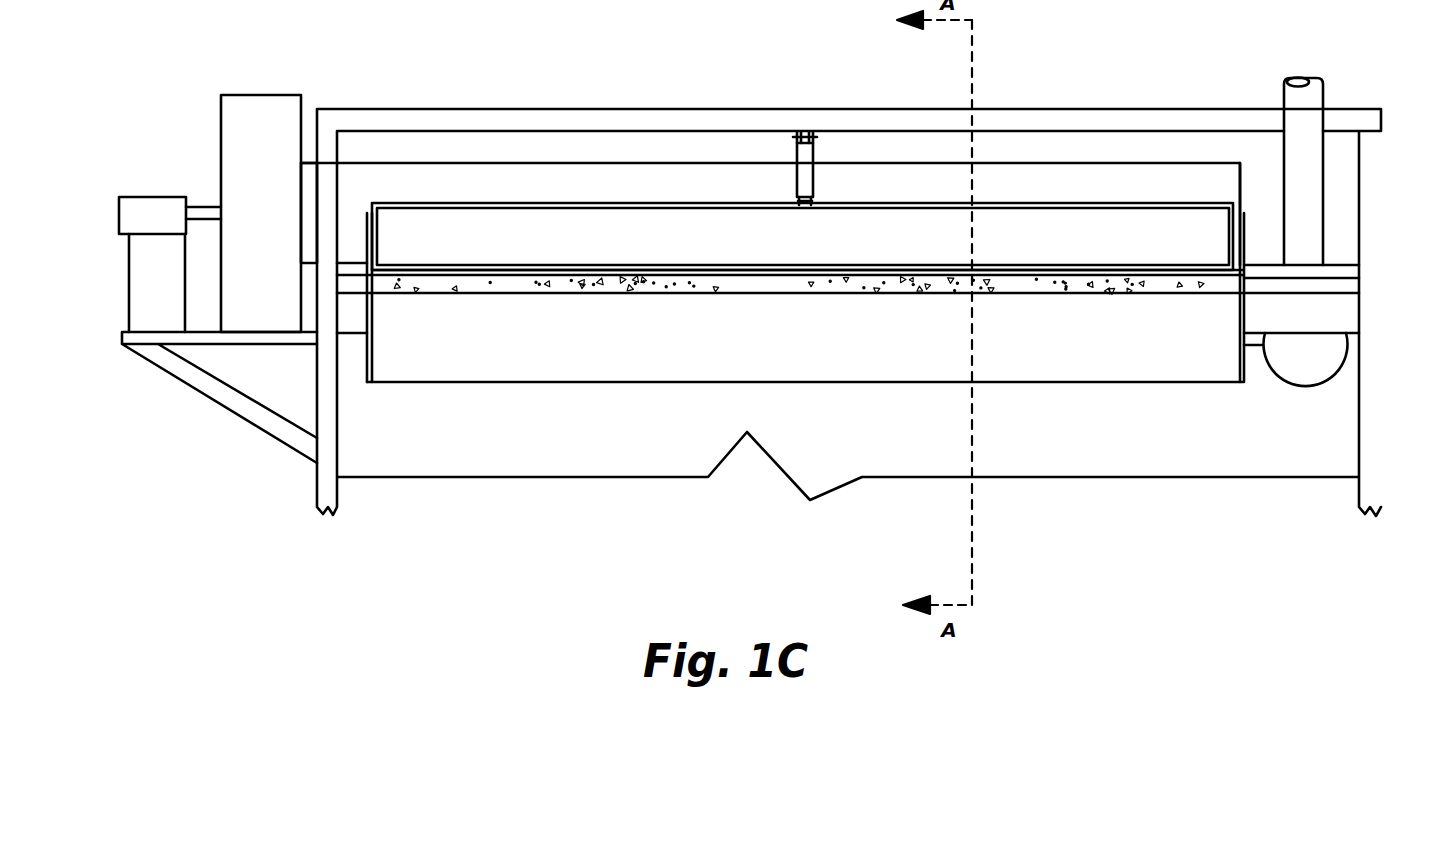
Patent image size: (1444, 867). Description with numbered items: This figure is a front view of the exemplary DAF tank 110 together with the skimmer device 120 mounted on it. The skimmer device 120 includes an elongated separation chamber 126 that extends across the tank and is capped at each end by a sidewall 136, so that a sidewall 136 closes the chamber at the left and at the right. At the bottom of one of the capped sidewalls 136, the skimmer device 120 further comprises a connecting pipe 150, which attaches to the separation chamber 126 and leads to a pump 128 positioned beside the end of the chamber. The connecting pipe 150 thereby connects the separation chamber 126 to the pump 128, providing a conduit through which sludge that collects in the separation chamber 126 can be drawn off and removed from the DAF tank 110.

The DAF tank 110 is at (347, 433).
The skimmer device 120 is at (612, 163).
The separation chamber 126 is at (1058, 355).
The pump 128 is at (1327, 375).
The sidewall 136 is at (368, 215).
The connecting pipe 150 is at (1250, 363).